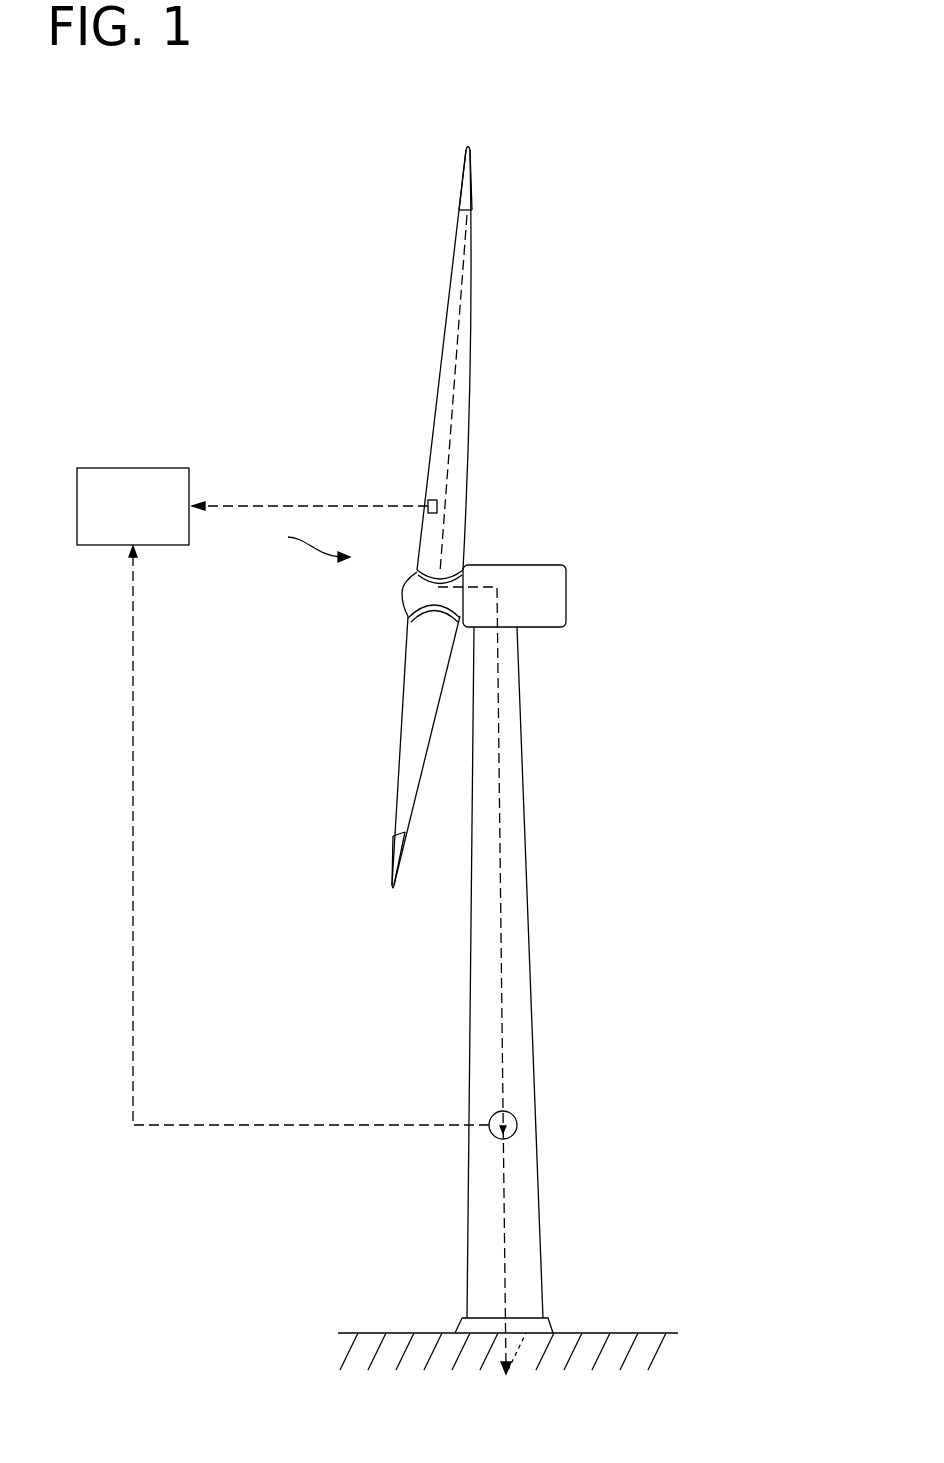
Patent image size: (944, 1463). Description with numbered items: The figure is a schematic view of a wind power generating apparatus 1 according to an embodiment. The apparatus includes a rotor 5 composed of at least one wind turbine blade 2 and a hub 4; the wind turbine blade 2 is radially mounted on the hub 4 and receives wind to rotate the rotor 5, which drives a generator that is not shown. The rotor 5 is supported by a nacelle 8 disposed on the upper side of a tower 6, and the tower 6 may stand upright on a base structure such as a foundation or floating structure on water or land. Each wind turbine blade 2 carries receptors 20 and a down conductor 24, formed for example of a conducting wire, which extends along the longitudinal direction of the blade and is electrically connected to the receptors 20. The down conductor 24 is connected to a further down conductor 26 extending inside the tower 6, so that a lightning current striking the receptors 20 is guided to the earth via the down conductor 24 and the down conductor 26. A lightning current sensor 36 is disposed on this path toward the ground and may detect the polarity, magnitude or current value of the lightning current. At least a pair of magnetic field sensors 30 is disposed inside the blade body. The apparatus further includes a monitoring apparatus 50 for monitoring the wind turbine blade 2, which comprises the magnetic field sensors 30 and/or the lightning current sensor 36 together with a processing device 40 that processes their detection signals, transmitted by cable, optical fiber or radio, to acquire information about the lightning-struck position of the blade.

The wind power generating apparatus 1 is at (630, 266).
The wind turbine blade 2 is at (450, 300).
The hub 4 is at (403, 593).
The rotor 5 is at (309, 543).
The tower 6 is at (530, 977).
The nacelle 8 is at (566, 597).
The receptor 20 is at (461, 181).
The down conductor 24 is at (450, 430).
The down conductor 26 is at (500, 835).
The magnetic field sensor 30 is at (428, 500).
The lightning current sensor 36 is at (517, 1125).
The processing device 40 is at (133, 467).
The monitoring apparatus 50 is at (283, 692).